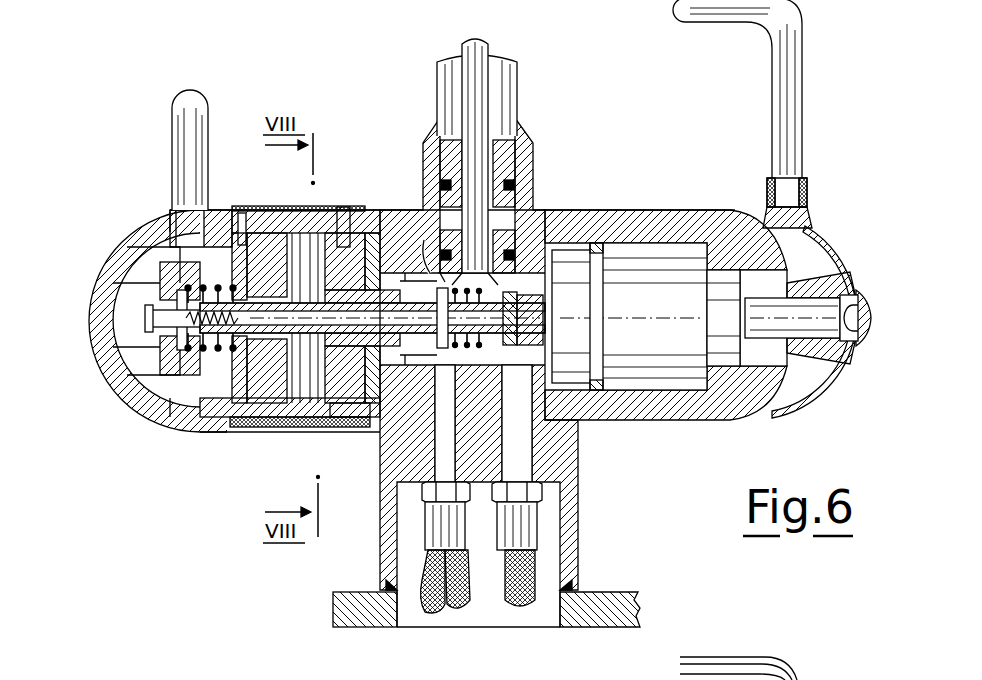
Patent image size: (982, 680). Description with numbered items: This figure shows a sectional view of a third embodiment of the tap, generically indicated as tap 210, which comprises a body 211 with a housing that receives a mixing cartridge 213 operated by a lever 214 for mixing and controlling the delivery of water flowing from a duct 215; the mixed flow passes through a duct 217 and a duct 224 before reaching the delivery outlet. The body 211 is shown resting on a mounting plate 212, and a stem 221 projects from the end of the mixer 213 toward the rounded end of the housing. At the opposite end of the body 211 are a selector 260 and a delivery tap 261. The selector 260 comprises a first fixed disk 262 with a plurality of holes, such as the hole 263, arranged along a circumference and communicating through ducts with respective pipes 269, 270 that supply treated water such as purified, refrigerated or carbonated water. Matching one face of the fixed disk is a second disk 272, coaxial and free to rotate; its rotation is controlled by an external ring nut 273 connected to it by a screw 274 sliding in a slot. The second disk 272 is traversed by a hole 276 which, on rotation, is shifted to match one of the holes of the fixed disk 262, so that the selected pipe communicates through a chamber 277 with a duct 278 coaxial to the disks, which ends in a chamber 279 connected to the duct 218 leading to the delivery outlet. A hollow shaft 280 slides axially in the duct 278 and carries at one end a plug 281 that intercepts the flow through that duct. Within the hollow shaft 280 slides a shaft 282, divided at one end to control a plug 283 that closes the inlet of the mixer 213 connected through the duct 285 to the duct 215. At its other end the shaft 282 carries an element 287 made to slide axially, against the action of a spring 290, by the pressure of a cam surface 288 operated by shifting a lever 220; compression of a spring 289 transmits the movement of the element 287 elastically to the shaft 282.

The tap 210 is at (124, 121).
The body 211 is at (627, 220).
The mounting base plate 212 is at (615, 597).
The mixing cartridge 213 is at (673, 258).
The lever 214 is at (790, 83).
The duct 215 is at (522, 612).
The duct 217 is at (533, 240).
The duct 218 is at (488, 122).
The lever 220 is at (197, 100).
The rod 221 is at (797, 318).
The duct 224 is at (512, 70).
The selector 260 is at (273, 447).
The delivery tap 261 is at (105, 408).
The first fixed disk 262 is at (372, 228).
The hole 263 is at (373, 423).
The pipe 269 is at (458, 612).
The pipe 270 is at (433, 612).
The second disk 272 is at (313, 430).
The external ring nut 273 is at (318, 208).
The screw 274 is at (345, 207).
The hole 276 is at (340, 430).
The chamber 277 is at (293, 220).
The duct 278 is at (428, 273).
The chamber 279 is at (445, 280).
The hollow shaft 280 is at (242, 302).
The plug 281 is at (471, 319).
The shaft 282 is at (242, 345).
The plug 283 is at (597, 328).
The duct 285 is at (517, 445).
The element 287 is at (158, 383).
The cam surface 288 is at (180, 300).
The spring 289 is at (152, 250).
The spring 290 is at (190, 360).